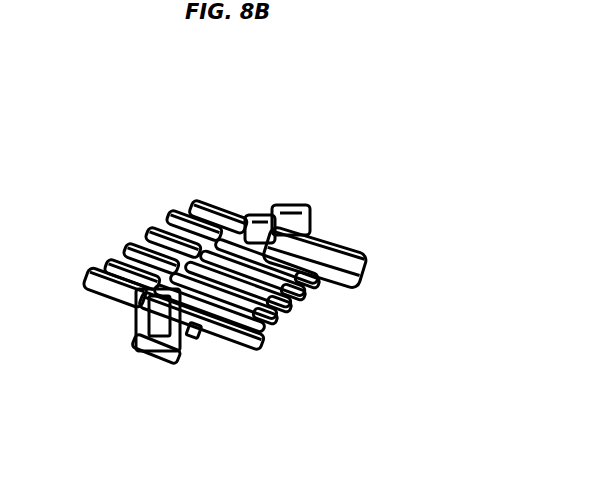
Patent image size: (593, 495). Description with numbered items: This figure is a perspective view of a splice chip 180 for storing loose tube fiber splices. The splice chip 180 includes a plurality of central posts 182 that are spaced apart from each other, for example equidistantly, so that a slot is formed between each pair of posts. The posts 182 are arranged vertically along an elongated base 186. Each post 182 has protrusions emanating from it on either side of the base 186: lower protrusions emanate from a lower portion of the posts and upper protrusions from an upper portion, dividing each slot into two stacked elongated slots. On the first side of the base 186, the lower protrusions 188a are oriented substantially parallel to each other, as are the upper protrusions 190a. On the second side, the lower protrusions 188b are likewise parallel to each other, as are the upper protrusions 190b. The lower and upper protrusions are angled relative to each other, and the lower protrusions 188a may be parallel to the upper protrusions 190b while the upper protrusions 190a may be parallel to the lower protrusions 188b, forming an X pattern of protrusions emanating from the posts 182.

The splice chip 180 is at (88, 170).
The central post 182 is at (260, 240).
The elongated base 186 is at (152, 350).
The lower protrusions on the first side 188a is at (108, 302).
The lower protrusions on the second side 188b is at (358, 282).
The upper protrusions on the first side 190a is at (90, 280).
The upper protrusions on the second side 190b is at (237, 323).